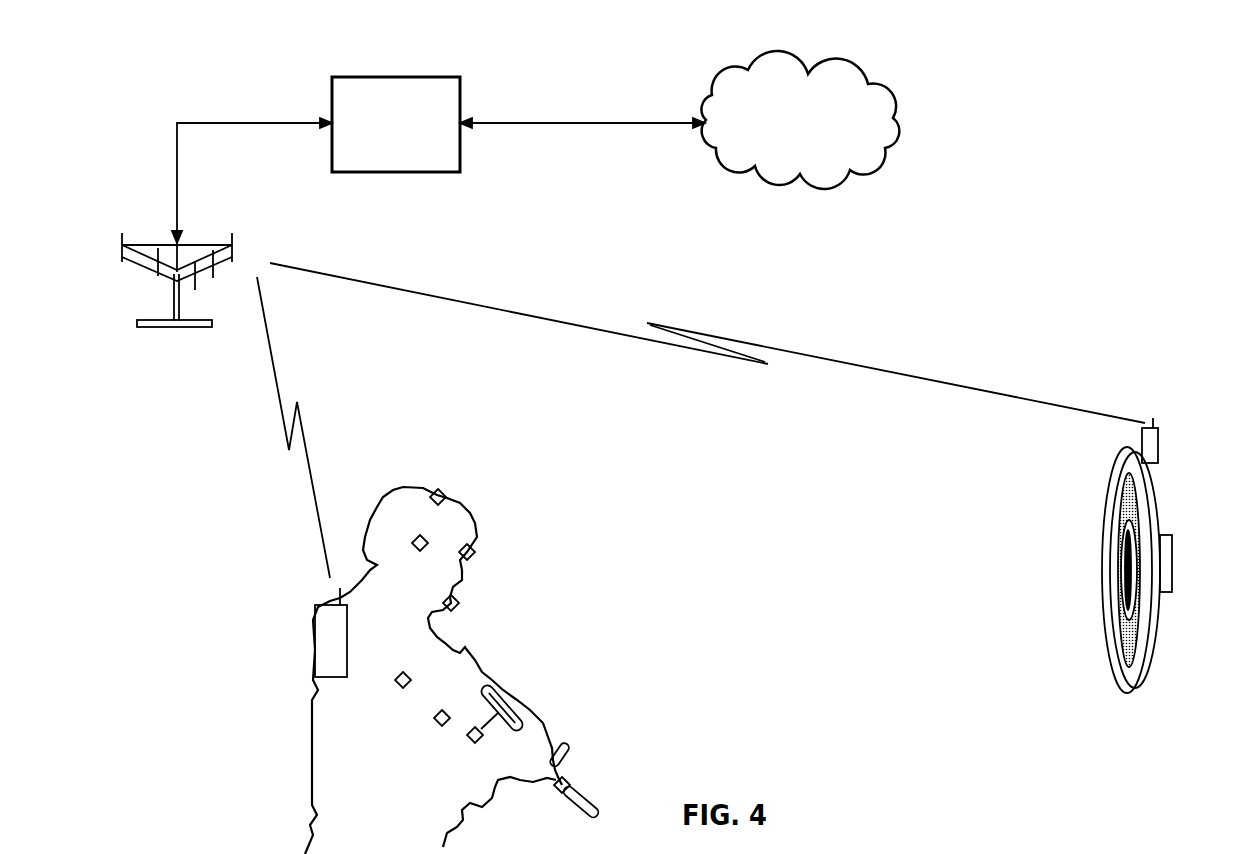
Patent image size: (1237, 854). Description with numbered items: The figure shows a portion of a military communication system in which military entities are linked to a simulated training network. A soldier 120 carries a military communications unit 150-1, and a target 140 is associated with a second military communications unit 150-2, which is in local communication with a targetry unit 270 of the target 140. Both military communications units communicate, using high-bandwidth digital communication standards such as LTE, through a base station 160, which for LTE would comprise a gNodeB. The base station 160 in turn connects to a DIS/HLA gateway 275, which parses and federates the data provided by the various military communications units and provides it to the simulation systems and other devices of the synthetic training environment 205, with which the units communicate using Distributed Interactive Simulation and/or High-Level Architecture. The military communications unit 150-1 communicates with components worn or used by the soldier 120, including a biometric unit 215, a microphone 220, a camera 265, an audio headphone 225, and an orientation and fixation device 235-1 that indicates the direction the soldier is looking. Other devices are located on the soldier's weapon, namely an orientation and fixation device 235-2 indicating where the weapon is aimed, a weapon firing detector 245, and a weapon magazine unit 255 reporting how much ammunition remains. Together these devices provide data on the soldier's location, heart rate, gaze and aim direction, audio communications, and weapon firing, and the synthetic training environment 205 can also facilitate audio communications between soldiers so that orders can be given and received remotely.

The DIS/HLA gateway 275 is at (460, 97).
The synthetic training environment 205 is at (880, 86).
The base station 160 is at (177, 328).
The soldier 120 is at (312, 758).
The military communications unit 150-1 is at (328, 630).
The second military communications unit 150-2 is at (1158, 428).
The targetry unit 270 is at (1172, 535).
The target 140 is at (1115, 693).
The orientation and fixation device 235-1 is at (447, 494).
The orientation and fixation device 235-2 is at (570, 784).
The audio headphone 225 is at (430, 543).
The camera 265 is at (476, 552).
The microphone 220 is at (460, 603).
The weapon magazine unit 255 is at (449, 716).
The weapon firing detector 245 is at (494, 688).
The biometric unit 215 is at (400, 690).